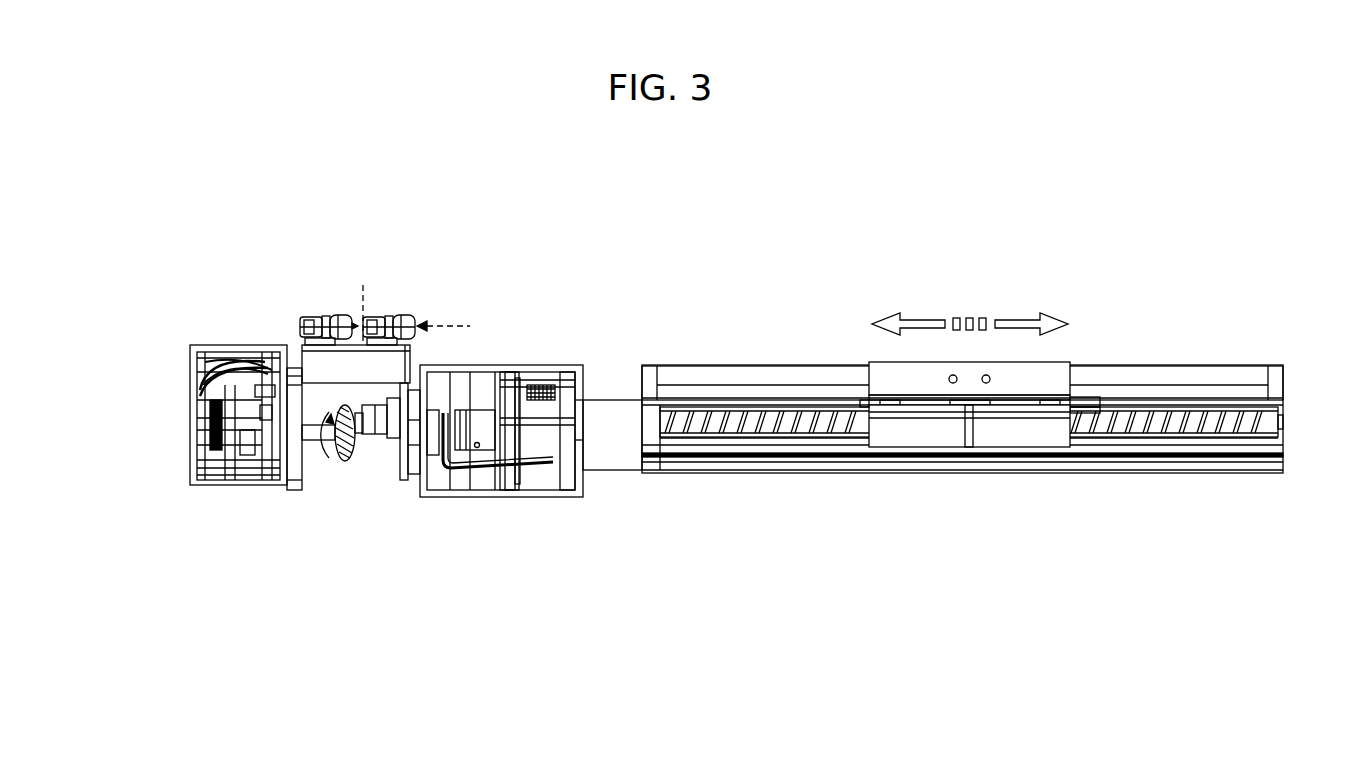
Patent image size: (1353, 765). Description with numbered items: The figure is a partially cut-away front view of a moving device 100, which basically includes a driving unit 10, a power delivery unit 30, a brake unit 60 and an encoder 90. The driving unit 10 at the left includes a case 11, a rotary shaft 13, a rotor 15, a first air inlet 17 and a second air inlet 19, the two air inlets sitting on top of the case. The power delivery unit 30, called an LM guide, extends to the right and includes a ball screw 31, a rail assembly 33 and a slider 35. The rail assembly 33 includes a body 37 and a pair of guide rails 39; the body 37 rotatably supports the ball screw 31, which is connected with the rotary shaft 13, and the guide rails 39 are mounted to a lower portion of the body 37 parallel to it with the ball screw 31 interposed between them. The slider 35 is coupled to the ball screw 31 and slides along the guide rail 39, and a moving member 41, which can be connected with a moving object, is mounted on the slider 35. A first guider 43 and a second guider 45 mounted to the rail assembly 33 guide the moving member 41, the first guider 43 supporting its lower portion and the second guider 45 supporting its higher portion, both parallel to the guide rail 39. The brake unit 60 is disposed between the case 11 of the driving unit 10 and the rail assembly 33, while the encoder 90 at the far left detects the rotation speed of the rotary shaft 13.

The moving device 100 is at (757, 207).
The driving unit 10 is at (373, 338).
The case 11 is at (290, 482).
The rotary shaft 13 is at (380, 442).
The rotor 15 is at (343, 478).
The first air inlet 17 is at (337, 318).
The second air inlet 19 is at (400, 318).
The power delivery unit 30 is at (1155, 360).
The ball screw 31 is at (815, 433).
The rail assembly 33 is at (1240, 478).
The slider 35 is at (1010, 435).
The body 37 is at (611, 457).
The guide rail 39 is at (1120, 440).
The moving member 41 is at (915, 385).
The first guider 43 is at (1098, 395).
The second guider 45 is at (766, 380).
The brake unit 60 is at (541, 503).
The encoder 90 is at (248, 487).